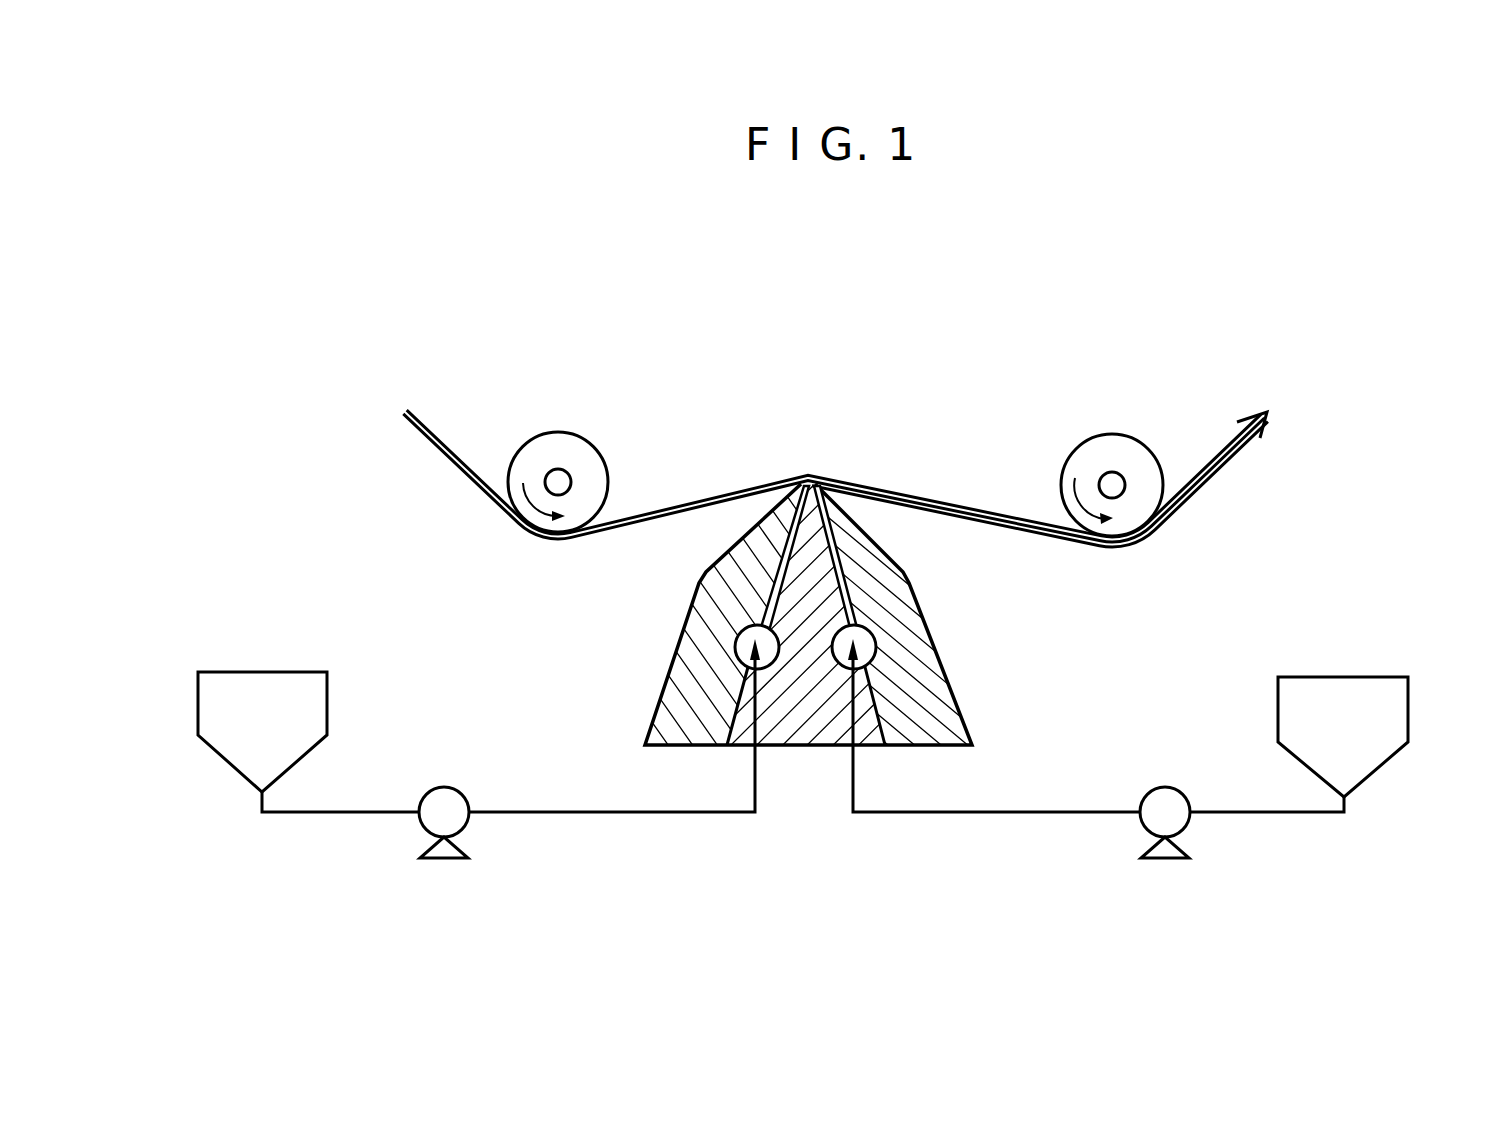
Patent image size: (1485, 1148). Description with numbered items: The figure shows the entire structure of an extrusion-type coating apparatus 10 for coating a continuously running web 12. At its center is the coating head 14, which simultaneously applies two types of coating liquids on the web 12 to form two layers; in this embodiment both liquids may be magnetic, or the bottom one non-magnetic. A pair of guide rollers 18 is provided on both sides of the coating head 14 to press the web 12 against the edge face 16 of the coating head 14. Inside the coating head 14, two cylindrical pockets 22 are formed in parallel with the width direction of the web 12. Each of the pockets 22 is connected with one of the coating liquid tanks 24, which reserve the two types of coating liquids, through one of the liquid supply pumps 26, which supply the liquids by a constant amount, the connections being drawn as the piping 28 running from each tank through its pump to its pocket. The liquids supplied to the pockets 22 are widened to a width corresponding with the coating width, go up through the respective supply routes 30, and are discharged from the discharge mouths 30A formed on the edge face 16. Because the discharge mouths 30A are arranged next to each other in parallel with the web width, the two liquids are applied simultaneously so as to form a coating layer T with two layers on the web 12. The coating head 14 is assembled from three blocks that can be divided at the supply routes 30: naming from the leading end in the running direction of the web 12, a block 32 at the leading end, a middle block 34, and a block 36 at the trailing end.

The coating apparatus 10 is at (1052, 367).
The web 12 is at (430, 420).
The coating head 14 is at (816, 614).
The edge face 16 is at (803, 466).
The guide rollers 18 is at (585, 460).
The pockets 22 is at (745, 653).
The coating liquid tanks 24 is at (267, 685).
The liquid supply pumps 26 is at (447, 800).
The supply pipes 28 is at (603, 815).
The supply routes 30 is at (770, 565).
The discharge mouths 30A is at (852, 488).
The block at the leading end 32 is at (720, 605).
The middle block 34 is at (805, 715).
The block at the trailing end 36 is at (935, 705).
The coating layer T is at (1177, 507).